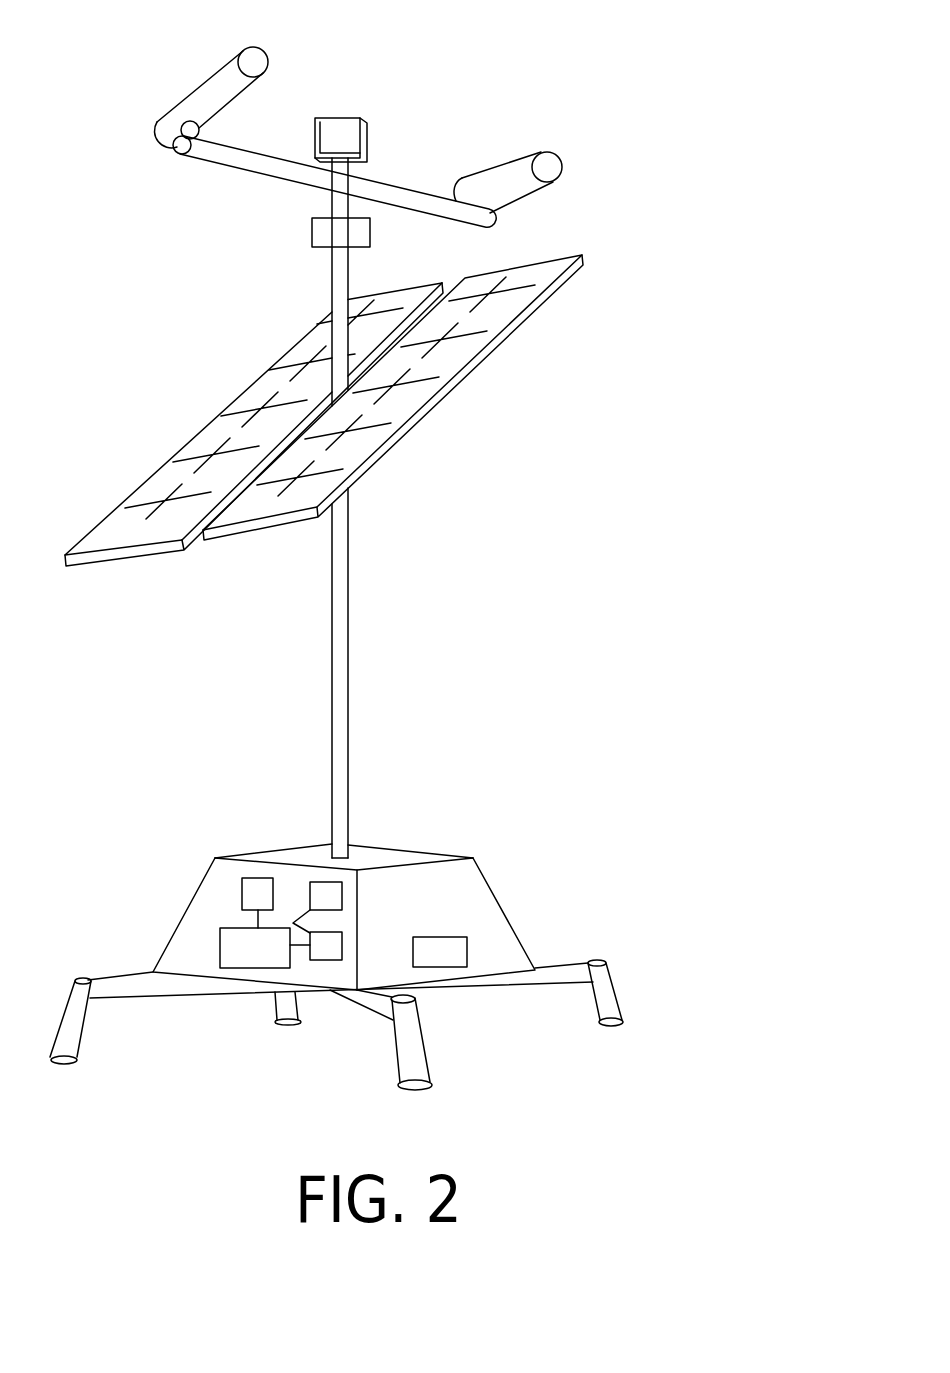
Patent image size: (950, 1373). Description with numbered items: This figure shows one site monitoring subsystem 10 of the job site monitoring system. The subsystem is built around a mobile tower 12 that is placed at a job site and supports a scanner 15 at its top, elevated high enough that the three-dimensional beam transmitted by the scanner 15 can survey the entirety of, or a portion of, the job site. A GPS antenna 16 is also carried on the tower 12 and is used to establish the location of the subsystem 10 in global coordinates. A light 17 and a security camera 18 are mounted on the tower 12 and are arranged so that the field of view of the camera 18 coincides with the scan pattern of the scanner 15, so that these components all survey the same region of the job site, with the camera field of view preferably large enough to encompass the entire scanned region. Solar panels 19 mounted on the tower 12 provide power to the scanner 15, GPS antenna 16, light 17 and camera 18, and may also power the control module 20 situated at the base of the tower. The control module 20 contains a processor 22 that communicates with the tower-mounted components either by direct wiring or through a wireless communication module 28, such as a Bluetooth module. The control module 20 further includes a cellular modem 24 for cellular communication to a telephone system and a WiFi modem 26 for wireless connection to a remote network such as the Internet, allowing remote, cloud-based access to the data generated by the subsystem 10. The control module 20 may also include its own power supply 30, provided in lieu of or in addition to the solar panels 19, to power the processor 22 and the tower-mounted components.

The site monitoring subsystem 10 is at (597, 463).
The mobile tower 12 is at (348, 697).
The scanner 15 is at (360, 120).
The GPS antenna 16 is at (312, 230).
The light 17 is at (548, 151).
The security camera 18 is at (250, 45).
The solar panels 19 is at (543, 300).
The control module 20 is at (468, 878).
The processor 22 is at (240, 937).
The cellular modem 24 is at (258, 885).
The WiFi modem 26 is at (334, 938).
The wireless communication module 28 is at (323, 888).
The power supply 30 is at (457, 945).